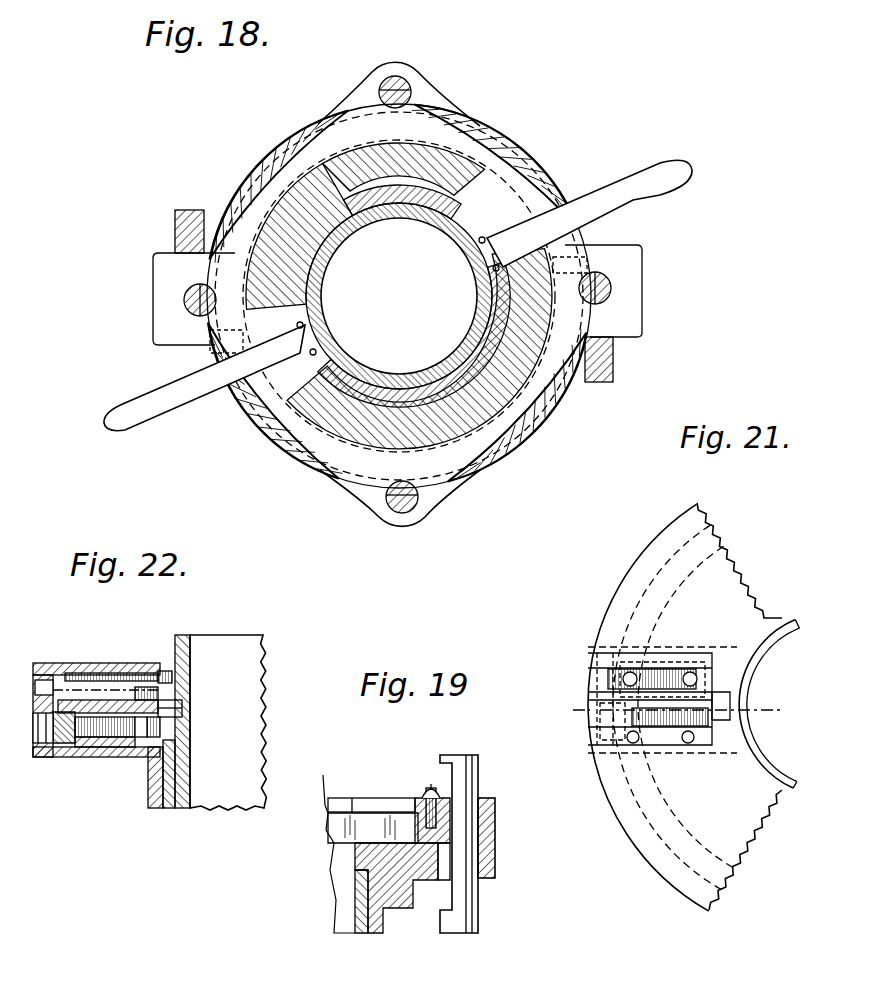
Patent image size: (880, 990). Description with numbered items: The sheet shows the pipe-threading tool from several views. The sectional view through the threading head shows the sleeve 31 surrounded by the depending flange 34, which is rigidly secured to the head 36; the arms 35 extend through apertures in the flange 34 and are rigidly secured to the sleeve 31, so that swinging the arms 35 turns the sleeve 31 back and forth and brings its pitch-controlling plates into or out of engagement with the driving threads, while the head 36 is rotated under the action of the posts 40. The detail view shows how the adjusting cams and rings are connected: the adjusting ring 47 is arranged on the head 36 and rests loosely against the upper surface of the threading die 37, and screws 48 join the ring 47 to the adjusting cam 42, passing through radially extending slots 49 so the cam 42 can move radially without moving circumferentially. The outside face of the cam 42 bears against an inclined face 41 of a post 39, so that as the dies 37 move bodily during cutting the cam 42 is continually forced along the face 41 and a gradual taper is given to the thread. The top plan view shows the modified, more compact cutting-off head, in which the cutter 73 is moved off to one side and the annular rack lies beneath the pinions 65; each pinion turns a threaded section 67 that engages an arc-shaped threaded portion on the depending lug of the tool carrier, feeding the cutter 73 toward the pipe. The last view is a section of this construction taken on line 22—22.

In FIG. 18, the sleeve 31 is at (388, 378).
In FIG. 21, the sleeve 31 is at (769, 704).
In FIG. 19, the sleeve 31 is at (360, 933).
In FIG. 18, the depending flange 34 is at (323, 370).
In FIG. 18, the arms 35 is at (663, 190).
In FIG. 18, the head 36 is at (155, 348).
In FIG. 21, the head 36 is at (685, 707).
In FIG. 19, the head 36 is at (495, 820).
In FIG. 18, the post 39 is at (398, 514).
In FIG. 19, the post 39 is at (478, 775).
In FIG. 18, the mounting lug 40 is at (180, 232).
In FIG. 19, the inclined face 41 is at (458, 890).
In FIG. 18, the adjusting cam 42 is at (399, 296).
In FIG. 19, the adjusting cam 42 is at (446, 825).
In FIG. 19, the adjusting ring 47 is at (375, 785).
In FIG. 19, the screws 48 is at (432, 782).
In FIG. 19, the radially extending slots 49 is at (420, 800).
In FIG. 19, the threading tool 37 is at (340, 828).
In FIG. 21, the cutter 73 is at (713, 663).
In FIG. 21, the section line 22— 22 is at (659, 711).
In FIG. 22, the pinions 65 is at (40, 745).
In FIG. 22, the threaded section 67 is at (118, 737).